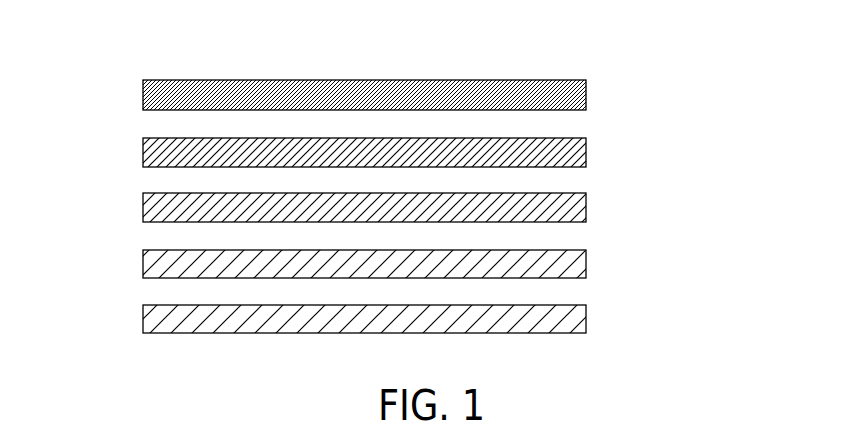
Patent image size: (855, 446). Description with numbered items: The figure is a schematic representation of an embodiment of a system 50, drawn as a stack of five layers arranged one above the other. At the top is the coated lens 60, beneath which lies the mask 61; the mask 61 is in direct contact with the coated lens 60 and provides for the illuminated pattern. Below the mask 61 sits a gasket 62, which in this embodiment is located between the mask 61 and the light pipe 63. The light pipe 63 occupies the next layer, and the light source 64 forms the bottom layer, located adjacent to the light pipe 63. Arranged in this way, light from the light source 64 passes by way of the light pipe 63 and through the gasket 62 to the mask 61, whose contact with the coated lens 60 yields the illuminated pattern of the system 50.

The system 50 is at (74, 276).
The coated lens 60 is at (612, 95).
The mask 61 is at (612, 151).
The gasket 62 is at (612, 207).
The light pipe 63 is at (612, 264).
The light source 64 is at (612, 320).